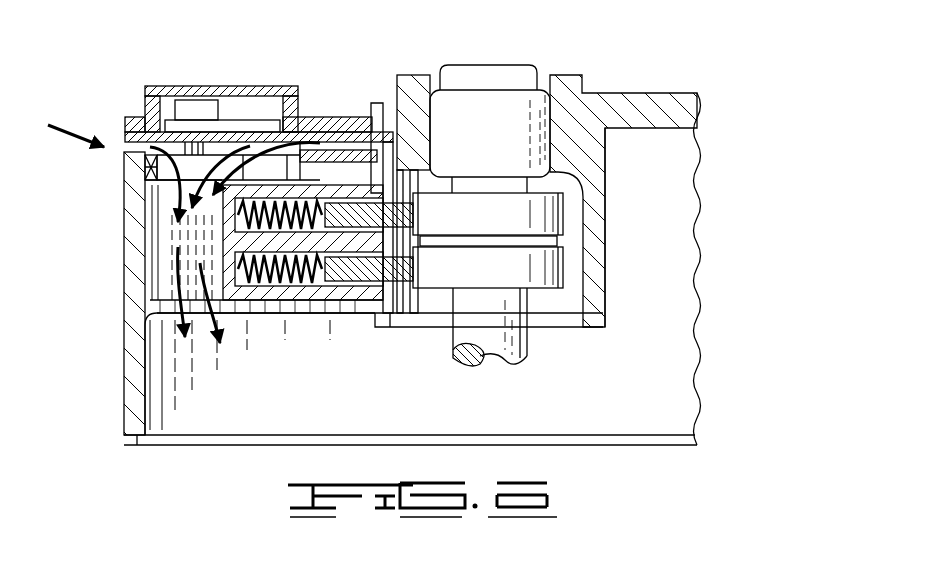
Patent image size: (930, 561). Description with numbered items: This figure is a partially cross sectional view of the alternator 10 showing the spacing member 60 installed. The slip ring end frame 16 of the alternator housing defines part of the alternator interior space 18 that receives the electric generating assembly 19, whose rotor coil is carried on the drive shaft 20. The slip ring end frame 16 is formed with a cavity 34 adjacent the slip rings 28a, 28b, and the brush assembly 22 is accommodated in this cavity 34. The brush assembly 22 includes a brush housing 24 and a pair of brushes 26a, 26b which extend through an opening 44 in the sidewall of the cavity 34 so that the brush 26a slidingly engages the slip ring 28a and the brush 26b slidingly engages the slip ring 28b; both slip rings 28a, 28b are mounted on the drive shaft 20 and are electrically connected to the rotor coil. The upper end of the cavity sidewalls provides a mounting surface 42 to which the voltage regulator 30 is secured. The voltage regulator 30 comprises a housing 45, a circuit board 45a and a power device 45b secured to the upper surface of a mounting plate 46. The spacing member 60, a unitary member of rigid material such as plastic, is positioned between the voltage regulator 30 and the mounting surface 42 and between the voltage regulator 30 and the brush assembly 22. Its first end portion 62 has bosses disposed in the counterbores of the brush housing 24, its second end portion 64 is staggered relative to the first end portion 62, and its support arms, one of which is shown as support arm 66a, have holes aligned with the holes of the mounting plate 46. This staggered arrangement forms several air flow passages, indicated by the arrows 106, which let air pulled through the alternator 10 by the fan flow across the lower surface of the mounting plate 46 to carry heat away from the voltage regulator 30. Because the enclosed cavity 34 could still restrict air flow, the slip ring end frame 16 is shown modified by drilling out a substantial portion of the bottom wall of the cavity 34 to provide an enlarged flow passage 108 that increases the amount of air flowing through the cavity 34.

The alternator 10 is at (415, 240).
The slip ring end frame 16 is at (620, 95).
The alternator interior space 18 is at (658, 372).
The electric generating assembly 19 is at (462, 370).
The drive shaft 20 is at (498, 349).
The brush assembly 22 is at (357, 290).
The brush housing 24 is at (300, 312).
The brush 26a is at (407, 215).
The brush 26b is at (407, 268).
The slip ring 28a is at (558, 222).
The slip ring 28b is at (558, 270).
The voltage regulator 30 is at (206, 80).
The cavity 34 is at (168, 240).
The mounting surface 42 is at (135, 147).
The opening 44 is at (412, 182).
The housing 45 is at (143, 98).
The circuit board 45a is at (243, 128).
The power device 45b is at (213, 108).
The mounting plate 46 is at (115, 138).
The spacing member 60 is at (147, 157).
The first end portion 62 is at (340, 157).
The second end portion 64 is at (150, 175).
The support arm 66a is at (200, 152).
The air flow passages 106 is at (177, 200).
The enlarged flow passage 108 is at (165, 325).